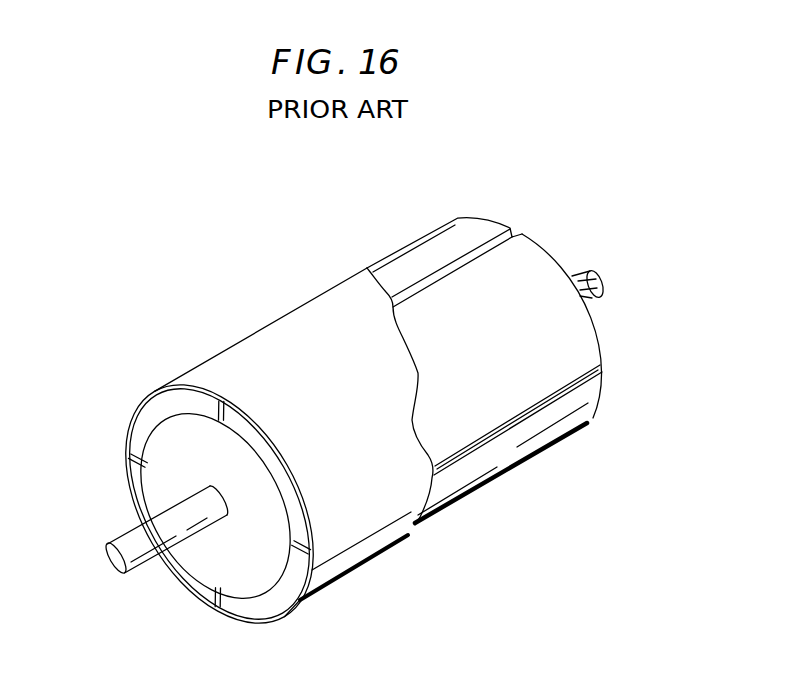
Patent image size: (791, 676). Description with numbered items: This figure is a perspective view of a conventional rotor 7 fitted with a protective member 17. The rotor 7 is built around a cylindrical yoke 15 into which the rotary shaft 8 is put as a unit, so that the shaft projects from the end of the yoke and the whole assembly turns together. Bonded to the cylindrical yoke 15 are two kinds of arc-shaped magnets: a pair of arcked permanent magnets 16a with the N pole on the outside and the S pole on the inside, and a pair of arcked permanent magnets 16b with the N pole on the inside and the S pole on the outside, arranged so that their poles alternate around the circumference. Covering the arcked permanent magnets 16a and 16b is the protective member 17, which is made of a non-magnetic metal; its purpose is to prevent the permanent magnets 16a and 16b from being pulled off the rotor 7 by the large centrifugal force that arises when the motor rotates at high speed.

The rotor 7 is at (541, 237).
The rotary shaft 8 is at (600, 276).
The cylindrical yoke 15 is at (212, 562).
The arcked permanent magnets 16a is at (140, 485).
The arcked permanent magnets 16b is at (423, 258).
The protective member 17 is at (380, 550).